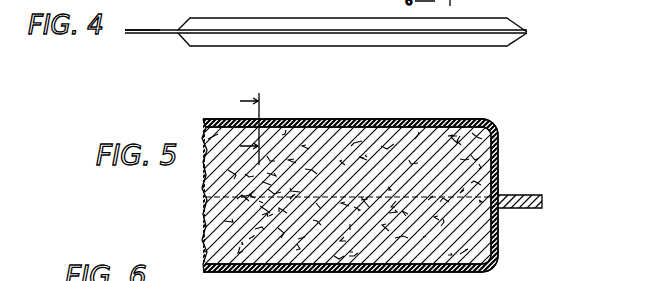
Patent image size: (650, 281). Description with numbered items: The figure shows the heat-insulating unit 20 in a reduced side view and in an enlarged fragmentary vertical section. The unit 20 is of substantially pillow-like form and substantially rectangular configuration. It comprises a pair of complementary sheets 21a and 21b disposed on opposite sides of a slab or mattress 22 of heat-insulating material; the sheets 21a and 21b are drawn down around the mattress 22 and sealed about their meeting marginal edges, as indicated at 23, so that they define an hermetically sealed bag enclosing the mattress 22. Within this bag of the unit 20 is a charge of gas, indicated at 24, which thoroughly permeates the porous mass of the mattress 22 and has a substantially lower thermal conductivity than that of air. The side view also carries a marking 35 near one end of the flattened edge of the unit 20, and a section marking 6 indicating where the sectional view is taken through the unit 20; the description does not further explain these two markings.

In FIG. 4, the heat-insulating unit 20 is at (345, 12).
In FIG. 5, the heat-insulating unit 20 is at (372, 114).
In FIG. 4, the complementary sheet 21a is at (507, 21).
In FIG. 5, the complementary sheet 21a is at (480, 121).
In FIG. 4, the complementary sheet 21b is at (507, 46).
In FIG. 5, the complementary sheet 21b is at (497, 267).
In FIG. 5, the mattress 22 is at (494, 160).
In FIG. 5, the seal 23 is at (535, 192).
In FIG. 5, the charge of gas 24 is at (341, 194).
In FIG. 4, the edge strip 35 is at (153, 29).
In FIG. 5, the section line 6- 6 is at (241, 129).